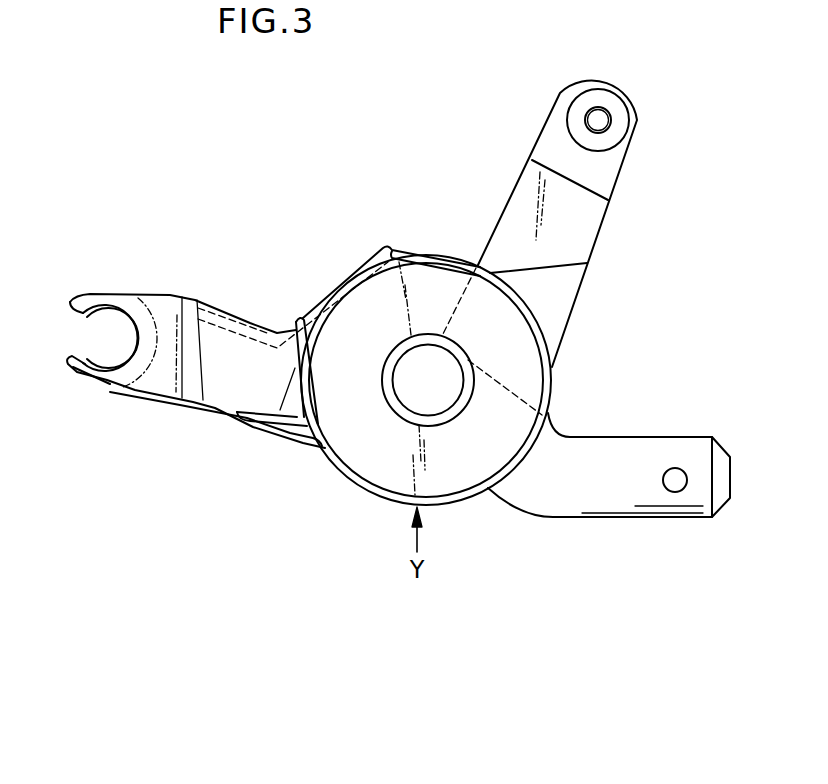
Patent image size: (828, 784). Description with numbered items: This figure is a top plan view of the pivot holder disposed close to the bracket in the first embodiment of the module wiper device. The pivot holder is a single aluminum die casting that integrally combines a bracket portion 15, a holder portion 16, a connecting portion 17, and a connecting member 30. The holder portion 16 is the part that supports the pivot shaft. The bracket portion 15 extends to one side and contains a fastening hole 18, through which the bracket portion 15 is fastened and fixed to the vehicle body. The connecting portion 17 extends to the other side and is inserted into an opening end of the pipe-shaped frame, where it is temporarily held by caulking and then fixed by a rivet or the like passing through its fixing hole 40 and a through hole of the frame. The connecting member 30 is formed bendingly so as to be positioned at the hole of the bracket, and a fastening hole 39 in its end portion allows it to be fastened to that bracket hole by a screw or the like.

The bracket portion 15 is at (352, 300).
The holder portion 16 is at (430, 338).
The connecting portion 17 is at (600, 452).
The fastening hole 18 is at (108, 338).
The connecting member 30 is at (583, 216).
The fastening hole 39 is at (596, 110).
The fixing hole 40 is at (676, 478).